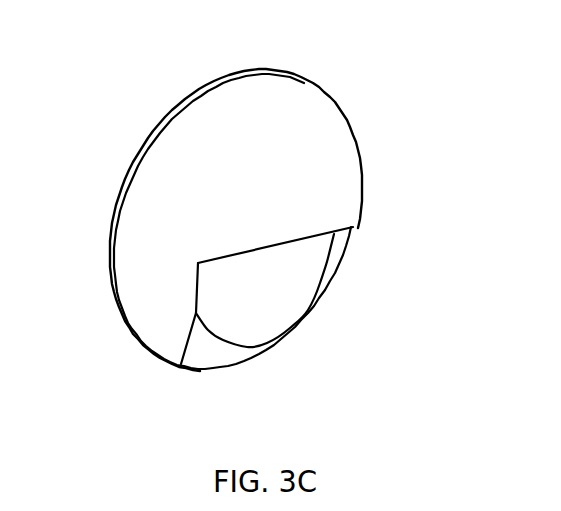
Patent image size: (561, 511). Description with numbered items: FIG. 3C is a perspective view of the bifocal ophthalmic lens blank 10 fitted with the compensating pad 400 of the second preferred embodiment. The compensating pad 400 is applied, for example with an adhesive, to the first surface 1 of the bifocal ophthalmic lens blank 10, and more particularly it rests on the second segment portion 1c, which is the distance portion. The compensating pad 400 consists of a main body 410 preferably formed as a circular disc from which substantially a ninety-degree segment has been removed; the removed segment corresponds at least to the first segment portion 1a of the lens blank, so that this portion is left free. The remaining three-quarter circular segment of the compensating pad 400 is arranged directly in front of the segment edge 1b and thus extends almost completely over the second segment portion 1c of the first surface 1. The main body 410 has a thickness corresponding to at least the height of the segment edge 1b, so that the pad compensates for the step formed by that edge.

The bifocal ophthalmic lens blank 10 is at (440, 84).
The compensating pad 400 is at (293, 120).
The main body 410 is at (158, 195).
The first surface 1 is at (203, 355).
The first segment portion 1a is at (287, 283).
The segment edge 1b is at (281, 248).
The second segment portion 1c is at (243, 351).